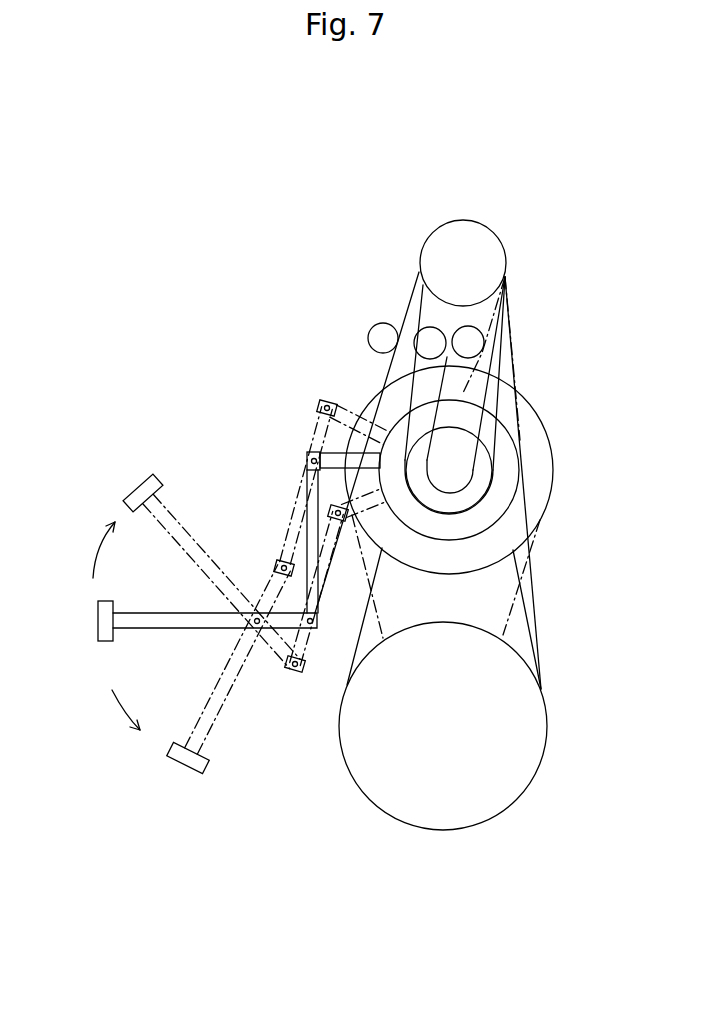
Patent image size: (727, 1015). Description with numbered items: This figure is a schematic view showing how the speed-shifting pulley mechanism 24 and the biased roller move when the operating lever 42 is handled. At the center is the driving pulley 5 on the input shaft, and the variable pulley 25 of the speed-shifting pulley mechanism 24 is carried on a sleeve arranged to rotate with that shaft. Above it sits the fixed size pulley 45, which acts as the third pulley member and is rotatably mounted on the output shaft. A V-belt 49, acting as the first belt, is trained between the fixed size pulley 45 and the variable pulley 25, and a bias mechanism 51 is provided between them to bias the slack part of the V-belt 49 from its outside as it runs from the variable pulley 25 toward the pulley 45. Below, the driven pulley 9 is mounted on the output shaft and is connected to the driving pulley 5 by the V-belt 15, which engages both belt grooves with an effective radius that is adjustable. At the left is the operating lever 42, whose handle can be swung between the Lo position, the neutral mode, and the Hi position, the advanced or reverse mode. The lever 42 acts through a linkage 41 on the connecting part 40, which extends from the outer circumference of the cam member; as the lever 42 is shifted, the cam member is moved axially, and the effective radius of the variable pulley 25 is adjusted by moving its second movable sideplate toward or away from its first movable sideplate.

The fixed size pulley 45 is at (427, 237).
The bias mechanism 51 is at (462, 328).
The speed-shifting pulley mechanism 24 is at (515, 280).
The V-belt 49 is at (500, 355).
The driving pulley 5 is at (553, 453).
The variable pulley 25 is at (513, 497).
The V-belt 15 is at (505, 626).
The driven pulley 9 is at (527, 790).
The connecting part 40 is at (348, 402).
The linkage 41 is at (307, 540).
The operating lever 42 is at (208, 703).